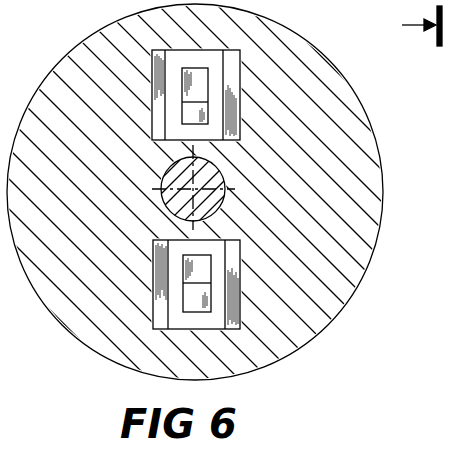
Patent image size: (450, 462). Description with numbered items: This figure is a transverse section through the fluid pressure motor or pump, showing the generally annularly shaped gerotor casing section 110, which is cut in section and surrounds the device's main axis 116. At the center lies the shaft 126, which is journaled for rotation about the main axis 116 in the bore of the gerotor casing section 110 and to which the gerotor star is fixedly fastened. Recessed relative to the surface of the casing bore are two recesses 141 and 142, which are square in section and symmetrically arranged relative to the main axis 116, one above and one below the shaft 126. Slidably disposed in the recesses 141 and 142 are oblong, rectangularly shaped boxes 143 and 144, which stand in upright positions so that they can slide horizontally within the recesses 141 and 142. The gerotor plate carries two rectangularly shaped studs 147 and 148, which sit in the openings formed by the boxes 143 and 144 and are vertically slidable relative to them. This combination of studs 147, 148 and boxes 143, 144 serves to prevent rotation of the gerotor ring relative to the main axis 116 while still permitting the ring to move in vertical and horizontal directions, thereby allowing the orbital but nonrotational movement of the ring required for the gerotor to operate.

The gerotor casing section 110 is at (382, 164).
The main axis 116 is at (196, 188).
The shaft 126 is at (221, 204).
The recess 141 is at (223, 79).
The recess 142 is at (199, 299).
The box 143 is at (230, 110).
The box 144 is at (170, 271).
The stud 147 is at (193, 100).
The stud 148 is at (195, 298).